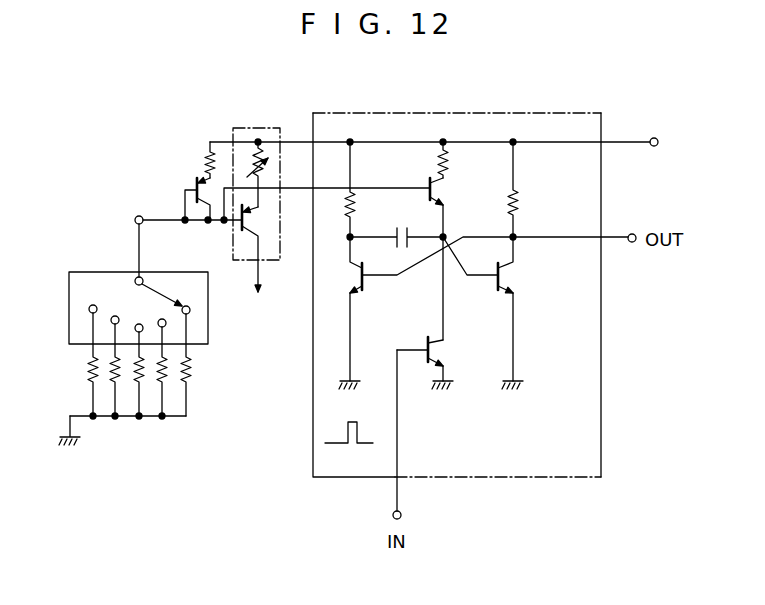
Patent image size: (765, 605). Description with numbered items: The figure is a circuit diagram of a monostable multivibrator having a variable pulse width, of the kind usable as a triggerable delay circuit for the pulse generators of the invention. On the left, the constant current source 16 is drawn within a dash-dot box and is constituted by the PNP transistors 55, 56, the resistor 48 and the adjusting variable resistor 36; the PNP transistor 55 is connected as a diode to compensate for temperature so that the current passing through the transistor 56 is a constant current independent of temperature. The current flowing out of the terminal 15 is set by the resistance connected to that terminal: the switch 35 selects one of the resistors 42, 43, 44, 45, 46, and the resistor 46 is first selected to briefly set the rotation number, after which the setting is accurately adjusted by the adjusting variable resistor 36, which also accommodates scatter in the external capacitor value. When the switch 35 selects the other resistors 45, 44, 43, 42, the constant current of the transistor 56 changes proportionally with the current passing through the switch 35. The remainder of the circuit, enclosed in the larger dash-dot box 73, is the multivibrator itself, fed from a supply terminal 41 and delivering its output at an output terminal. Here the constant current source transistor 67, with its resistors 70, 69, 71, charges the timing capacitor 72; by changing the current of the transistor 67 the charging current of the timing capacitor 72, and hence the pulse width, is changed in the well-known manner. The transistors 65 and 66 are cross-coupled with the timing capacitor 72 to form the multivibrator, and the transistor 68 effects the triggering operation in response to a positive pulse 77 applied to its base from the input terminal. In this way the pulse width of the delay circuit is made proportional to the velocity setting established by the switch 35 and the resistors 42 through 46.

The terminal 15 is at (143, 216).
The constant current source 16 is at (250, 127).
The switch 35 is at (69, 325).
The adjusting variable resistor 36 is at (250, 174).
The power supply terminal 41 is at (667, 144).
The resistor 42 is at (91, 369).
The resistor 43 is at (113, 382).
The resistor 44 is at (134, 378).
The resistor 45 is at (157, 375).
The resistor 46 is at (192, 373).
The resistor 48 is at (265, 153).
The PNP transistor 55 is at (200, 206).
The PNP transistor 56 is at (255, 221).
The transistor 65 is at (357, 285).
The transistor 66 is at (515, 271).
The constant current source transistor 67 is at (436, 188).
The transistor 68 is at (446, 351).
The resistor 69 is at (355, 208).
The resistor 70 is at (439, 168).
The resistor 71 is at (519, 203).
The timing capacitor 72 is at (403, 225).
The Schmitt trigger circuit 73 is at (603, 372).
The pulse signal 77 is at (350, 440).